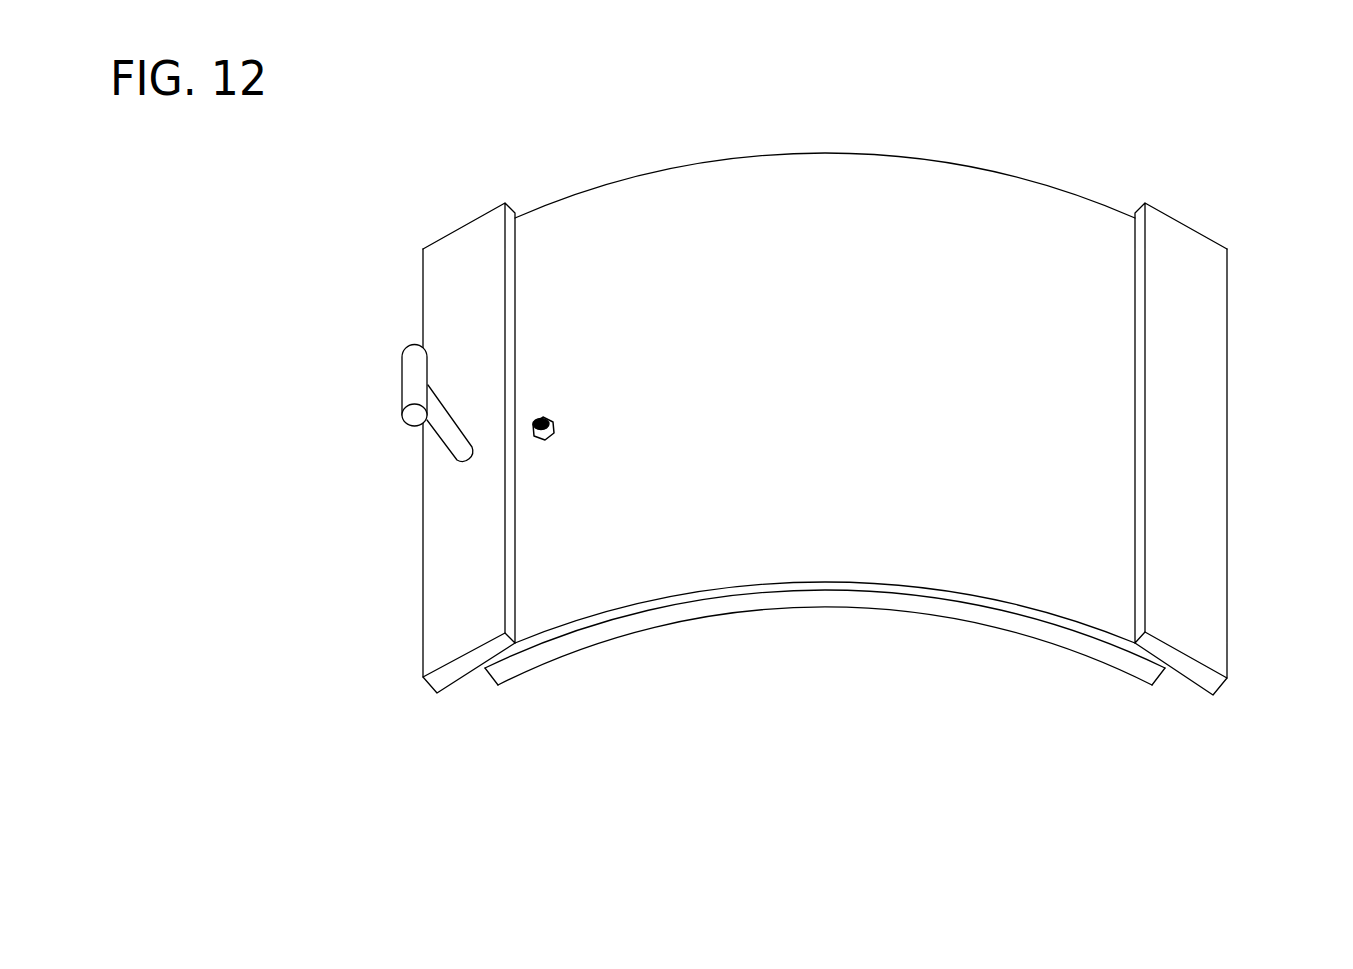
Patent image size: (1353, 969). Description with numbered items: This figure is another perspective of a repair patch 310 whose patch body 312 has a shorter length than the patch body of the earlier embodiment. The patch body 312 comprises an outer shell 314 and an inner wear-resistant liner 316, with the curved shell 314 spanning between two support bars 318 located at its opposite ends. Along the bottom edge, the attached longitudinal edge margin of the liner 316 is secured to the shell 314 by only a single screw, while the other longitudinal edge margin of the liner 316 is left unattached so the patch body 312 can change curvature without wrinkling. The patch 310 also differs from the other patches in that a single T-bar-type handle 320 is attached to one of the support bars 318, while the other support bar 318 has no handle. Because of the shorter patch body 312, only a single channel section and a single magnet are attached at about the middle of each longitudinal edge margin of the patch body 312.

The patch 310 is at (820, 523).
The patch body 312 is at (608, 675).
The shell 314 is at (996, 602).
The liner 316 is at (839, 605).
The support bar 318 is at (438, 625).
The T-bar-type handle 320 is at (412, 372).